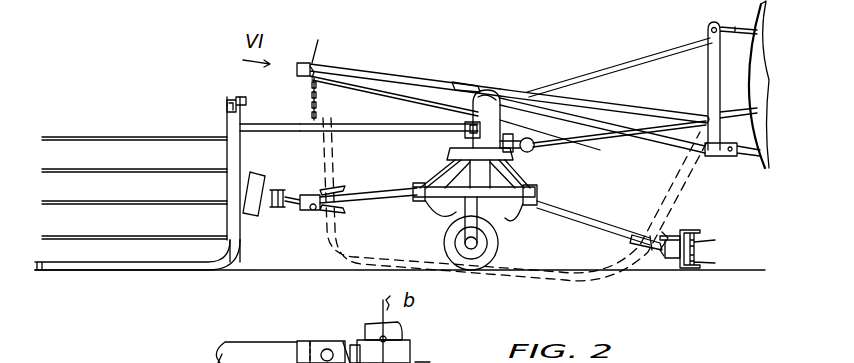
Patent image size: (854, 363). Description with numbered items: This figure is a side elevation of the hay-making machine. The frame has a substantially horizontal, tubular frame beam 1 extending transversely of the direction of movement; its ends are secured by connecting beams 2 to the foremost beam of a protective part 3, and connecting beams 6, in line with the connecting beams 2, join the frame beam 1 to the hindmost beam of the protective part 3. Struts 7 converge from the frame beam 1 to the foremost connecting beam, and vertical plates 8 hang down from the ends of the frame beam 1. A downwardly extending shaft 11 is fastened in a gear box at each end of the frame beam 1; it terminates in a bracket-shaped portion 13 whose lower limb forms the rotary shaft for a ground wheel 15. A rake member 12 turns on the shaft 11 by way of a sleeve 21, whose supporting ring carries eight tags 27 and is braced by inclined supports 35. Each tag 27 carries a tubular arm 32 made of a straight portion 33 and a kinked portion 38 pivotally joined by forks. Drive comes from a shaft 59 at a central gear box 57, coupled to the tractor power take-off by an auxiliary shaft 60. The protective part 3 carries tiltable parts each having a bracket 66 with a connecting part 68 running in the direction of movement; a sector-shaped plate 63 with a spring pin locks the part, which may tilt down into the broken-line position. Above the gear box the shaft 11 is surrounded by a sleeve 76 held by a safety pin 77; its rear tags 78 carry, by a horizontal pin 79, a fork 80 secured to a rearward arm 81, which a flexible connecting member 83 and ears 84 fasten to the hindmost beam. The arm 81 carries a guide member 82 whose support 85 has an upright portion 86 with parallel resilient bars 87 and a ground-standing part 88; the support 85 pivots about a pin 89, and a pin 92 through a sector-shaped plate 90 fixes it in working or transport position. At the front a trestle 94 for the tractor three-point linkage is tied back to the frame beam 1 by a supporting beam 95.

The frame beam 1 is at (492, 96).
The connecting beams 2 is at (611, 111).
The protective part 3 is at (362, 70).
The connecting beams 6 is at (393, 91).
The struts 7 is at (662, 141).
The vertical plates 8 is at (468, 117).
The shaft 11 is at (417, 341).
The rake member 12 is at (696, 228).
The bracket-shaped portion 13 is at (496, 233).
The ground wheel 15 is at (492, 250).
The sleeve 21 is at (444, 226).
The tags 27 is at (439, 206).
The tubular arm 32 is at (362, 194).
The portion of the arm 33 is at (590, 232).
The supports 35 is at (425, 172).
The portion of the arm 38 is at (290, 212).
The gear box 57 is at (450, 146).
The shaft 59 is at (522, 150).
The auxiliary shaft 60 is at (590, 141).
The sector-shaped plate 63 is at (322, 31).
The bracket 66 is at (441, 75).
The connecting part 68 is at (455, 82).
The sleeve 76 is at (439, 355).
The safety pin 77 is at (402, 330).
The tags 78 is at (353, 352).
The pin 79 is at (332, 341).
The fork 80 is at (298, 340).
The arm 81 is at (385, 133).
The guide member 82 is at (148, 231).
The flexible connecting member 83 is at (310, 105).
The ears 84 is at (309, 75).
The support 85 is at (242, 253).
The upright portion 86 is at (241, 157).
The resilient bars 87 is at (119, 200).
The part 88 is at (121, 272).
The pin 89 is at (227, 129).
The sector-shaped plate 90 is at (240, 96).
The pin 92 is at (228, 106).
The trestle 94 is at (710, 71).
The supporting beam 95 is at (657, 62).